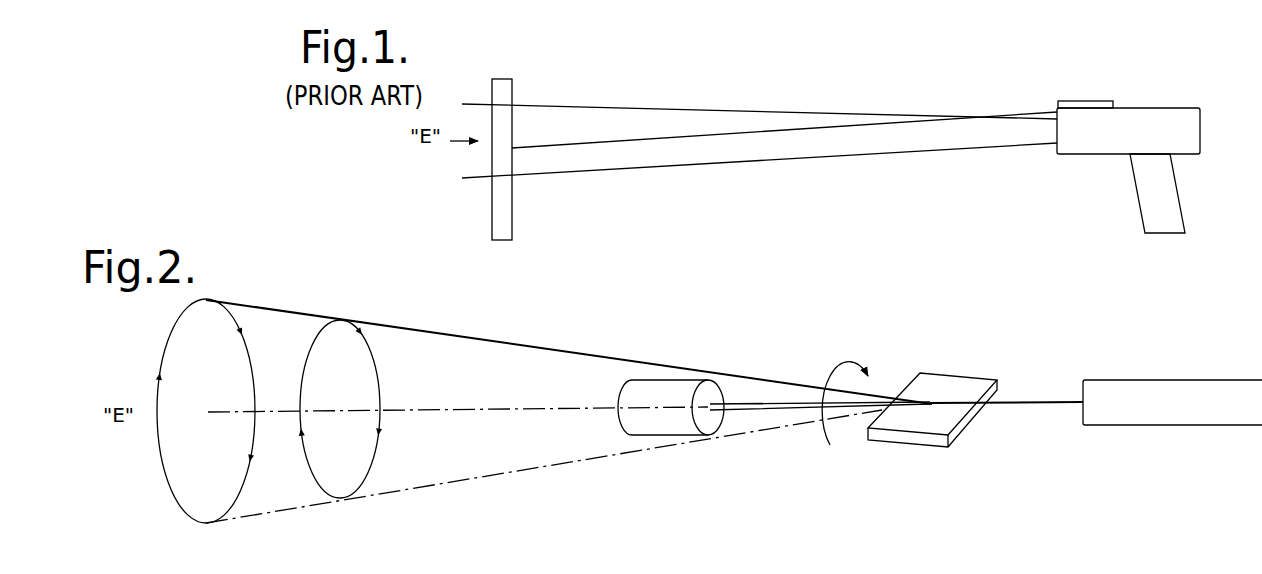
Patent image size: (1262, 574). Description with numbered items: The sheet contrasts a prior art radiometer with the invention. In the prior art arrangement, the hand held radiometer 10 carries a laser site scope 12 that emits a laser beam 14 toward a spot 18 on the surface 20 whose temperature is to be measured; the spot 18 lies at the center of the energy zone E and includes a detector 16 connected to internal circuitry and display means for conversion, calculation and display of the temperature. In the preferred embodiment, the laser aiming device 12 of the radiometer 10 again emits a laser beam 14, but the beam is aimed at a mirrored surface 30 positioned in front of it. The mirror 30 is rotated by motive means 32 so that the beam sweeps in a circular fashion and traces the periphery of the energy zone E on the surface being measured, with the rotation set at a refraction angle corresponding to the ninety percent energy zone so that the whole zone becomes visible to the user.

In FIG. 1, the radiometer 10 is at (1186, 198).
In FIG. 1, the laser site scope 12 is at (1093, 101).
In FIG. 2, the laser site scope 12 is at (1180, 380).
In FIG. 1, the laser beam 14 is at (1015, 112).
In FIG. 2, the laser beam 14 is at (1043, 400).
In FIG. 1, the detector 16 is at (1060, 136).
In FIG. 1, the spot 18 is at (512, 148).
In FIG. 1, the surface 20 is at (492, 212).
In FIG. 2, the mirrored surface 30 is at (945, 373).
In FIG. 2, the motive means 32 is at (668, 380).